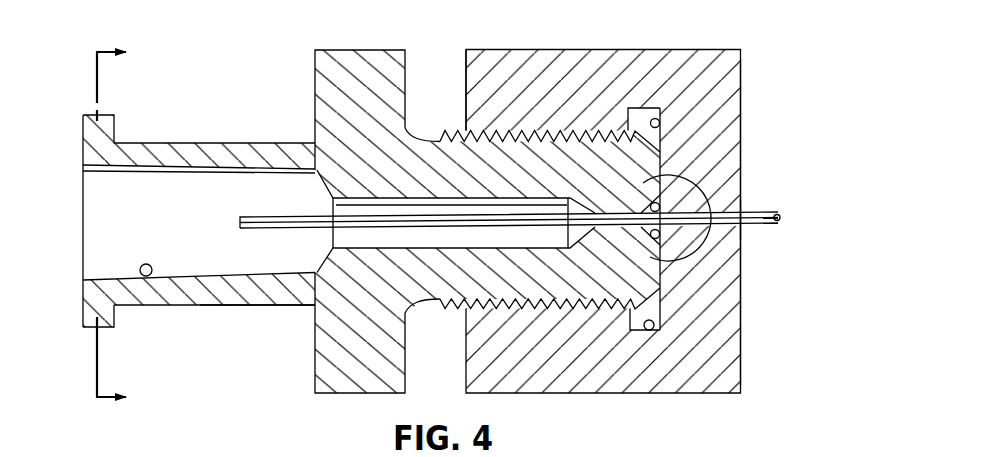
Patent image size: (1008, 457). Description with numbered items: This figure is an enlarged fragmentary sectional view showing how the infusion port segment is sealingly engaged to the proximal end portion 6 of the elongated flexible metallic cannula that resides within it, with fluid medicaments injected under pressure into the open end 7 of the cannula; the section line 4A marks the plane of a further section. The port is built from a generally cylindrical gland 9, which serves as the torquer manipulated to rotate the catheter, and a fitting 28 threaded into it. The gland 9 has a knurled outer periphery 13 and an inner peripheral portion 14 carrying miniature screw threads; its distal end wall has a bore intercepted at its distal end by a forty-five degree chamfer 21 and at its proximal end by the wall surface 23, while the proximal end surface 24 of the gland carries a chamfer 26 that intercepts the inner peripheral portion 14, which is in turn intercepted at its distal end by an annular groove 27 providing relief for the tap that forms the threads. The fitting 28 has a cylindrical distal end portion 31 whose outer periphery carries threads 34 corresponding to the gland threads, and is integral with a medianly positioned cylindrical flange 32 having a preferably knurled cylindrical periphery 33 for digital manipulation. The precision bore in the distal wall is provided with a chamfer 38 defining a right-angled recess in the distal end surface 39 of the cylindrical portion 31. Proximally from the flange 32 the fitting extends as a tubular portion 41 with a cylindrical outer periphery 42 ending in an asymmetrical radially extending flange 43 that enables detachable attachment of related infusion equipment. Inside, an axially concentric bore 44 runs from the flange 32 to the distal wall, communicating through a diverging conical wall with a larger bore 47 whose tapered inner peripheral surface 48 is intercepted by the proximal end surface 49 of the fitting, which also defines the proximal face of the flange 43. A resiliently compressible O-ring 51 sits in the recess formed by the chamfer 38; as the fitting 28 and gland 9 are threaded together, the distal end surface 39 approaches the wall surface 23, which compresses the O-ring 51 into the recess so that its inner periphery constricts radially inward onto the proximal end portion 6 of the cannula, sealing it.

The proximal end portion 6 is at (752, 212).
The open end 7 is at (232, 222).
The gland 9 is at (689, 40).
The knurled outer periphery 13 is at (520, 50).
The inner peripheral portion 14 is at (641, 182).
The chamfer 21 is at (742, 228).
The wall surface 23 is at (658, 118).
The proximal end surface 24 is at (466, 78).
The chamfer 26 is at (483, 313).
The annular groove 27 is at (645, 332).
The fitting 28 is at (294, 90).
The cylindrical distal end portion 31 is at (482, 278).
The cylindrical flange 32 is at (337, 357).
The cylindrical periphery 33 is at (355, 50).
The threads 34 is at (448, 128).
The chamfer 38 is at (652, 252).
The distal end surface 39 is at (665, 162).
The tubular portion 41 is at (259, 296).
The cylindrical outer periphery 42 is at (208, 306).
The asymmetrical radially extending flange 43 is at (92, 133).
The bore 44 is at (335, 240).
The larger bore 47 is at (130, 187).
The inner peripheral surface 48 is at (149, 277).
The proximal end surface 49 is at (83, 292).
The O-ring 51 is at (660, 206).
The section line 4A- 4A is at (83, 224).